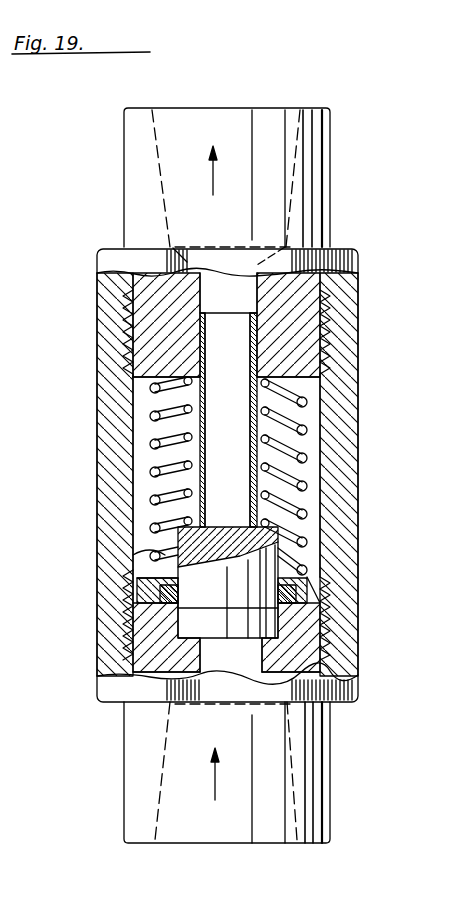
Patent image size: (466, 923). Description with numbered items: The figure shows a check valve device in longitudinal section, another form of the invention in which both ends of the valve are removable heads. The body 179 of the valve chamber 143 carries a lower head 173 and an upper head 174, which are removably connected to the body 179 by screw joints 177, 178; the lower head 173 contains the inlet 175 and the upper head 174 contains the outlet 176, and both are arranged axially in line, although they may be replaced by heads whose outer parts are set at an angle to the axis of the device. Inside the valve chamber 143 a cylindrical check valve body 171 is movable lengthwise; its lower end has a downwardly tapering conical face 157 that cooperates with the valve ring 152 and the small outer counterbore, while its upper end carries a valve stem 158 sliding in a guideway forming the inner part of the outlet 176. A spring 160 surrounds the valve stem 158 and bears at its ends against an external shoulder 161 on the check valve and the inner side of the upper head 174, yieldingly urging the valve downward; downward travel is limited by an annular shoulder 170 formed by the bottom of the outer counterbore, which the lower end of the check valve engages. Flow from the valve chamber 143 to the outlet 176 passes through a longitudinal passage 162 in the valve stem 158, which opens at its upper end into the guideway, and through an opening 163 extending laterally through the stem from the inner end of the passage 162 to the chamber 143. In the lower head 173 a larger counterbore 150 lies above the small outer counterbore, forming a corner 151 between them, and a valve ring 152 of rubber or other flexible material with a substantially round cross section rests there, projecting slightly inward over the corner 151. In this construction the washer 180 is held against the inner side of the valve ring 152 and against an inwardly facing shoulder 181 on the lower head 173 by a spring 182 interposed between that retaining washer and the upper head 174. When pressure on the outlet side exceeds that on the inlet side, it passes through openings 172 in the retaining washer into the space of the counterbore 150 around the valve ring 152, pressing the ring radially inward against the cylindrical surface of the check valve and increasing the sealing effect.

The upper head 174 is at (330, 152).
The lower head 173 is at (330, 809).
The body of the valve chamber 179 is at (350, 464).
The screw joint 178 is at (308, 347).
The screw joint 177 is at (323, 633).
The outlet 176 is at (228, 293).
The inlet 175 is at (231, 655).
The valve stem 158 is at (204, 357).
The longitudinal passage 162 is at (228, 420).
The opening 163 is at (207, 488).
The valve member 171 is at (190, 611).
The conical face 157 is at (225, 599).
The corner 151 is at (268, 580).
The spring 160 is at (188, 393).
The spring 182 is at (303, 403).
The valve chamber 143 is at (147, 458).
The external shoulder 161 is at (165, 538).
The openings 172 is at (165, 577).
The counterbore 150 is at (165, 599).
The valve ring 152 is at (160, 602).
The washer 180 is at (310, 583).
The inwardly facing shoulder 181 is at (328, 598).
The annular shoulder 170 is at (185, 649).